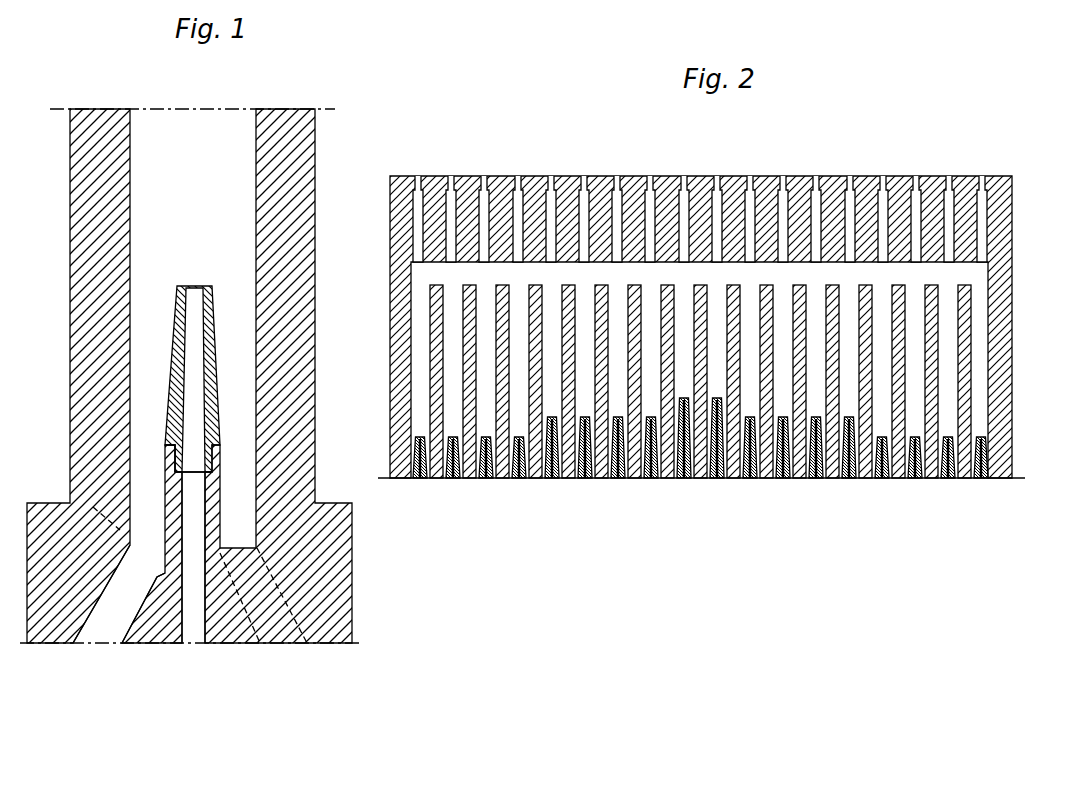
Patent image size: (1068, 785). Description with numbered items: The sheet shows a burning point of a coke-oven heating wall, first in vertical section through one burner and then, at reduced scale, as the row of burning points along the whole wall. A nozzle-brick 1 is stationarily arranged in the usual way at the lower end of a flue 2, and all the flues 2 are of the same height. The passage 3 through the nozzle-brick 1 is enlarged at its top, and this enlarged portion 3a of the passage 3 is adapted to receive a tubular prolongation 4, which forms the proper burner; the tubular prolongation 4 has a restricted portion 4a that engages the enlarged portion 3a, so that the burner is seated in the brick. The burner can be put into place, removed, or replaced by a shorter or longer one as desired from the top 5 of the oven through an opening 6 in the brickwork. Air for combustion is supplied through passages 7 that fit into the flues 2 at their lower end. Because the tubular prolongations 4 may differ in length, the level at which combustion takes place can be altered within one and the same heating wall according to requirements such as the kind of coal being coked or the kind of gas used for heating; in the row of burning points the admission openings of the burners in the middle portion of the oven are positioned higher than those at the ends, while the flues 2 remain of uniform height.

In FIG. 1, the nozzle-brick 1 is at (208, 527).
In FIG. 2, the nozzle-brick 1 is at (610, 477).
In FIG. 1, the flue 2 is at (113, 376).
In FIG. 2, the flue 2 is at (483, 382).
In FIG. 1, the passage 3 is at (193, 327).
In FIG. 1, the enlarged portion 3a is at (196, 470).
In FIG. 1, the tubular prolongation 4 is at (173, 343).
In FIG. 2, the tubular prolongation 4 is at (503, 477).
In FIG. 1, the restricted portion 4a is at (167, 452).
In FIG. 2, the top of the oven 5 is at (830, 182).
In FIG. 2, the opening 6 is at (583, 212).
In FIG. 1, the air passage 7 is at (113, 610).